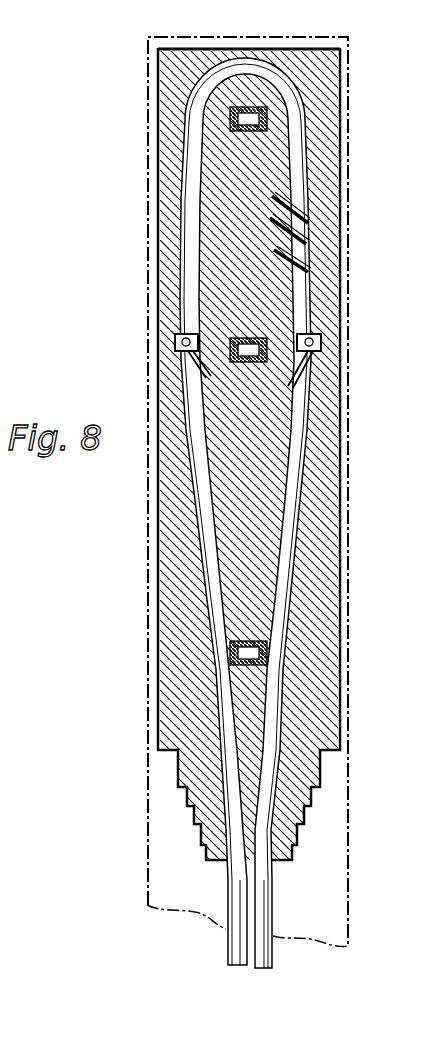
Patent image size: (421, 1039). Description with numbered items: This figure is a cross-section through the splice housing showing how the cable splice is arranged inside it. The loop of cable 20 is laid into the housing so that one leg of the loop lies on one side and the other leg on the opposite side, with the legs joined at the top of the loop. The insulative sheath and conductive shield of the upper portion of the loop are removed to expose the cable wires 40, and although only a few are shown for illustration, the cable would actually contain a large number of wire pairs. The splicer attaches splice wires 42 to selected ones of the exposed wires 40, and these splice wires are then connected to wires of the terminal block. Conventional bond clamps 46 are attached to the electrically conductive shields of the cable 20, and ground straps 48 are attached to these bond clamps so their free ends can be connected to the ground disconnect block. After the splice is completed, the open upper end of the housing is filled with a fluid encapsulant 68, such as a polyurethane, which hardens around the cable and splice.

The cable 20 is at (192, 541).
The cable wires 40 is at (298, 142).
The splice wires 42 is at (280, 223).
The bond clamps 46 is at (183, 356).
The ground straps 48 is at (290, 385).
The fluid encapsulant 68 is at (223, 507).